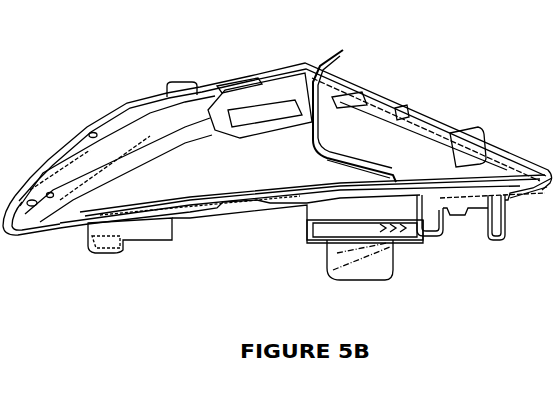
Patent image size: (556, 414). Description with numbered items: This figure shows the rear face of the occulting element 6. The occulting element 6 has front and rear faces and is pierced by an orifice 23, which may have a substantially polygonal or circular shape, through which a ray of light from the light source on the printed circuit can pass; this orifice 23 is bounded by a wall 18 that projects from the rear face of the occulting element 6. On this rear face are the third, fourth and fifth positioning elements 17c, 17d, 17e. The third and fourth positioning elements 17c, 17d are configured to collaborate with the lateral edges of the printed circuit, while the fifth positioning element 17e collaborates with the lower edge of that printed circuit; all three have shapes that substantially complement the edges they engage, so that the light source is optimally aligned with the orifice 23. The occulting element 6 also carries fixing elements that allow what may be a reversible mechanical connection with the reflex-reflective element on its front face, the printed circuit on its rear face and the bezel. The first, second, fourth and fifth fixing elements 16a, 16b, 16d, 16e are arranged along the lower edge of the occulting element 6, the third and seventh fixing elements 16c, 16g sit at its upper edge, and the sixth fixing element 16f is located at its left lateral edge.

The occulting element 6 is at (32, 53).
The first fixing element 16a is at (360, 278).
The second fixing element 16b is at (118, 247).
The third fixing element 16c is at (180, 85).
The fourth fixing element 16d is at (357, 205).
The fifth fixing element 16e is at (97, 228).
The sixth fixing element 16f is at (71, 168).
The seventh fixing element 16g is at (250, 92).
The third positioning element 17c is at (340, 48).
The fourth positioning element 17d is at (124, 167).
The fifth positioning element 17e is at (197, 193).
The wall 18 is at (290, 122).
The orifice 23 is at (257, 118).